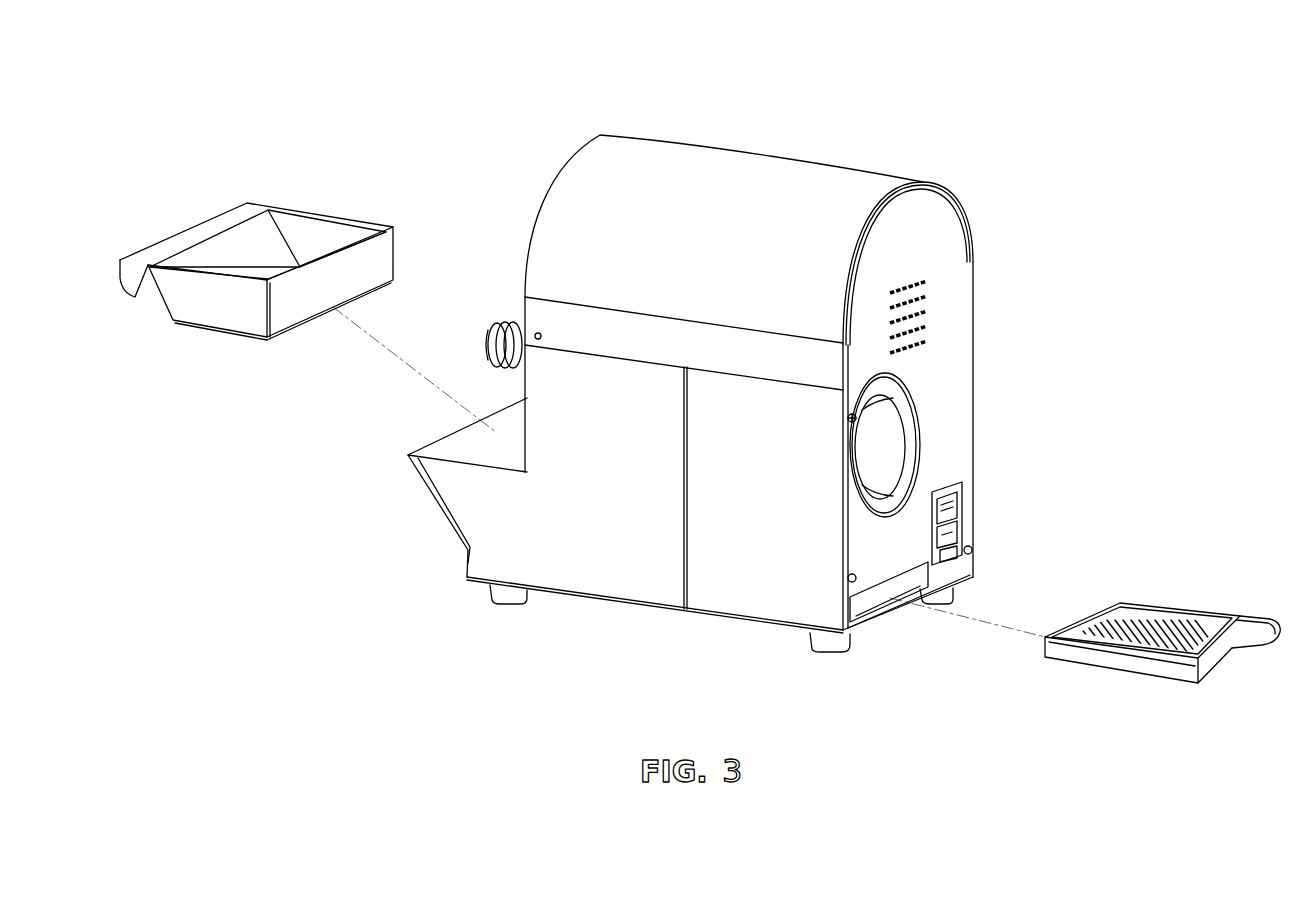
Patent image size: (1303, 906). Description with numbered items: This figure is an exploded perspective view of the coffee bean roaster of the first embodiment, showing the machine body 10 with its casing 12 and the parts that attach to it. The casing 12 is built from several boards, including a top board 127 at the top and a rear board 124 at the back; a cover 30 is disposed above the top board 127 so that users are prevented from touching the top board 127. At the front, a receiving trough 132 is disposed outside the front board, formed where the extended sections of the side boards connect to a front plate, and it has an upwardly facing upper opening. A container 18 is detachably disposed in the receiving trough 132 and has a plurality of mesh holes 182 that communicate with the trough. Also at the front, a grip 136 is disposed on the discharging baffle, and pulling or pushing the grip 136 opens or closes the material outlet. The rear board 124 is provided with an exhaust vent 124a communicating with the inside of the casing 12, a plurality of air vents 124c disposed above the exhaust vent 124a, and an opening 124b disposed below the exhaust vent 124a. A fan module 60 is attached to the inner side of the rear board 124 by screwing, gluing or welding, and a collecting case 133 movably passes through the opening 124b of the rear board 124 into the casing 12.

The machine body 10 is at (587, 138).
The cover 30 is at (628, 158).
The casing 12 is at (579, 583).
The container 18 is at (207, 217).
The mesh holes 182 is at (300, 267).
The grip 136 is at (505, 320).
The receiving trough 132 is at (455, 450).
The rear board 124 is at (907, 262).
The top board 127 is at (920, 183).
The air vents 124c is at (925, 300).
The exhaust vent 124a is at (908, 431).
The fan module 60 is at (892, 455).
The opening 124b is at (867, 607).
The collecting case 133 is at (1188, 610).